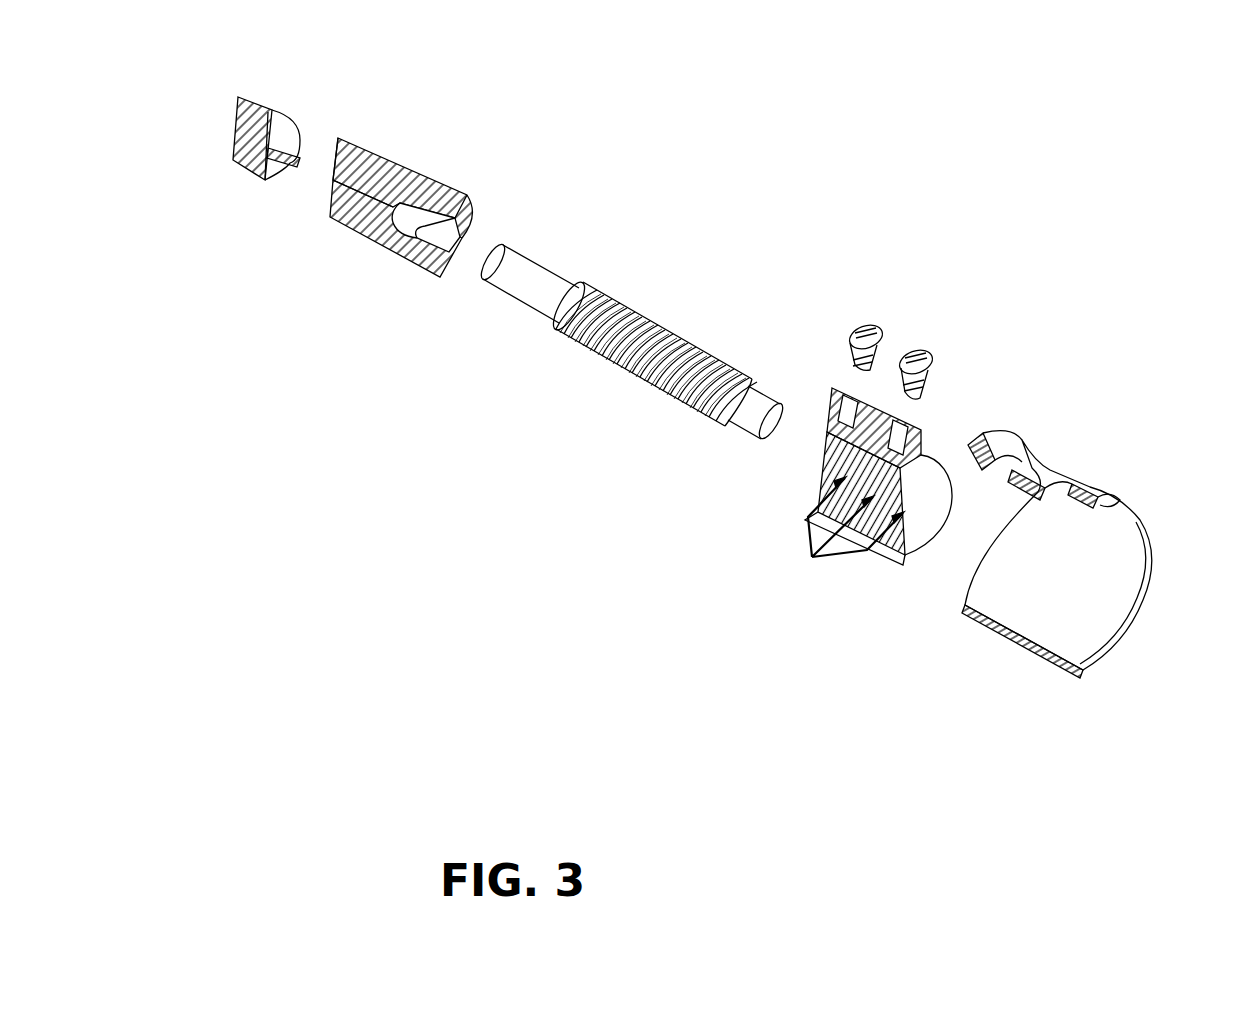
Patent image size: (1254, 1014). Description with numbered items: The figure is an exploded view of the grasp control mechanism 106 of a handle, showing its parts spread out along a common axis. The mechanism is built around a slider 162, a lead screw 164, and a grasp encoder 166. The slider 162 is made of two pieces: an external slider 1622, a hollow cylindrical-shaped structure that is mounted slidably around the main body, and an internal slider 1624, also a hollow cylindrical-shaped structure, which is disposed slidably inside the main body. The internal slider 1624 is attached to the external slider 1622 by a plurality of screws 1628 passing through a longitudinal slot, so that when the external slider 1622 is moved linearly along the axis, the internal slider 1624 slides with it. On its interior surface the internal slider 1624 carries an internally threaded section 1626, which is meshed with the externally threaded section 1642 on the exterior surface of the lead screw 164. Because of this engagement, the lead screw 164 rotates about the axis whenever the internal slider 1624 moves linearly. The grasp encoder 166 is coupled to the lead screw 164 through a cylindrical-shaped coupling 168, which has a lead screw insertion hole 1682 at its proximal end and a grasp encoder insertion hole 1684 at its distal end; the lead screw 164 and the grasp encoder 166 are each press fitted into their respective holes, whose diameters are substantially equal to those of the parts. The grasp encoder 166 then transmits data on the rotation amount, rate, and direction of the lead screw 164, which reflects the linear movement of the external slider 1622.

The grasp control mechanism 106 is at (243, 680).
The slider 162 is at (877, 318).
The external slider 1622 is at (960, 700).
The internal slider 1624 is at (779, 492).
The internally threaded section 1626 is at (838, 537).
The screws 1628 is at (860, 367).
The lead screw 164 is at (617, 363).
The externally threaded section 1642 is at (587, 263).
The grasp encoder 166 is at (202, 178).
The cylindrical-shaped coupling 168 is at (394, 202).
The lead screw insertion hole 1682 is at (452, 243).
The grasp encoder insertion hole 1684 is at (334, 181).